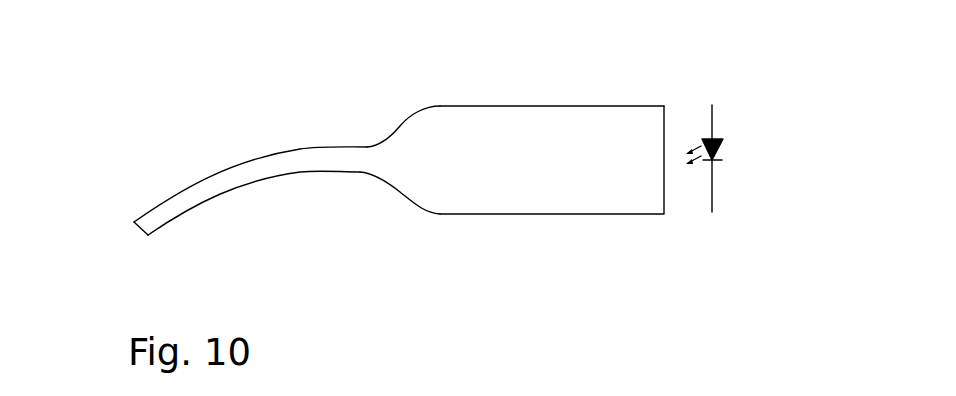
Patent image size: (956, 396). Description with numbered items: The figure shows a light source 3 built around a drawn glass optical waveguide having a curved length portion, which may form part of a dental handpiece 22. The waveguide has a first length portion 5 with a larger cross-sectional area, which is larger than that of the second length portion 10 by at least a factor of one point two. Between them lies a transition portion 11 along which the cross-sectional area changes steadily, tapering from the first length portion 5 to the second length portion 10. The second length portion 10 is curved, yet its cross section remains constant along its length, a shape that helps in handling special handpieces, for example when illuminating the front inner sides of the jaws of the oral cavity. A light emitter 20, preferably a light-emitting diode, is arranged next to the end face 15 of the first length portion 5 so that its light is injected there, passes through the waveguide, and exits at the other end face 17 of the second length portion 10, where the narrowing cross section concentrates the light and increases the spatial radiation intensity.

The light source 3 is at (513, 33).
The dental handpiece 22 is at (603, 152).
The first length portion 5 is at (547, 105).
The second length portion 10 is at (245, 159).
The transition portion 11 is at (403, 122).
The end face 15 is at (665, 187).
The end face 17 is at (134, 224).
The light emitter 20 is at (724, 138).